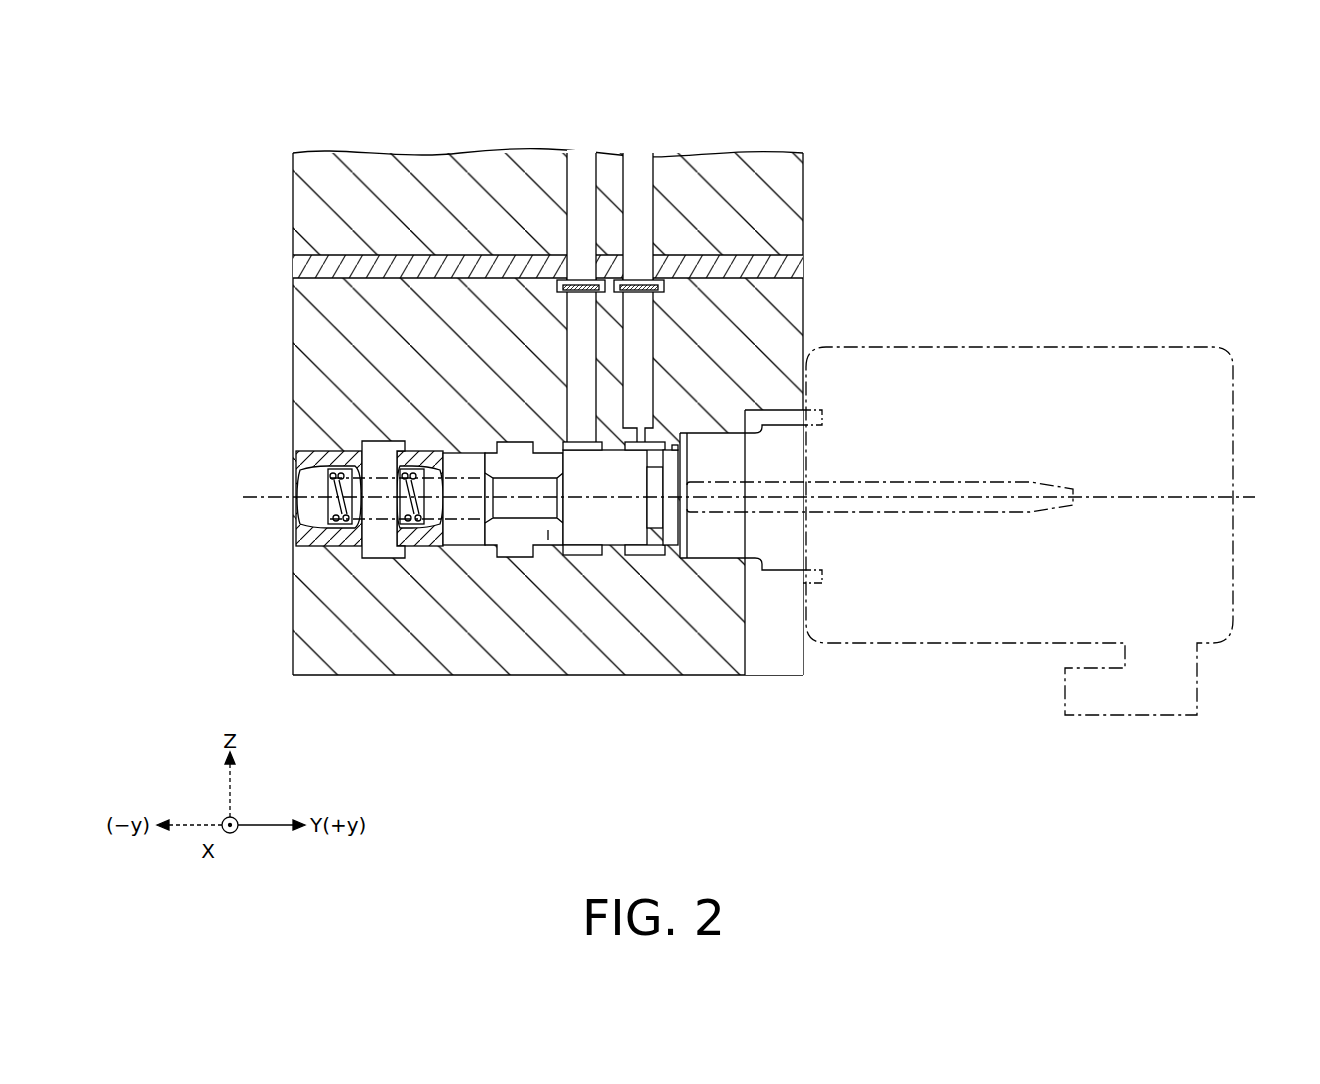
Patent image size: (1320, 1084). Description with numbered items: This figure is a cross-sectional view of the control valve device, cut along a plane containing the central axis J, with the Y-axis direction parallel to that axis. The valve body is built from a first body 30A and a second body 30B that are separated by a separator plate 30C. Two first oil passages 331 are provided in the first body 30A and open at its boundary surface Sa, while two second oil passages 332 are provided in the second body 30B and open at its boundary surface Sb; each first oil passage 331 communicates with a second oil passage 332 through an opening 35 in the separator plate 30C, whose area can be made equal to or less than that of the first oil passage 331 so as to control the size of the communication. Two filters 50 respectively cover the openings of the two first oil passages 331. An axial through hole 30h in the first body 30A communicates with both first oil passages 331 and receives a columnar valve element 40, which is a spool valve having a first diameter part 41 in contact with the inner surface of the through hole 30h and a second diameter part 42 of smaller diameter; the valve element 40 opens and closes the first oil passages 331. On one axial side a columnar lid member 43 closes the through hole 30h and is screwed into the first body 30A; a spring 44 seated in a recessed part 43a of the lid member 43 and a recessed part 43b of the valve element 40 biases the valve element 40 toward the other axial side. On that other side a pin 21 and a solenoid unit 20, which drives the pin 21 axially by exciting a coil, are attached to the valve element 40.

The first body 30A is at (305, 378).
The second body 30B is at (300, 188).
The separator plate 30C is at (305, 268).
The boundary surface Sa is at (303, 281).
The boundary surface Sb is at (324, 253).
The second oil passage 332 is at (646, 172).
The first oil passage 331 is at (650, 364).
The opening 35 is at (640, 278).
The filter 50 is at (642, 306).
The lid member 43 is at (293, 532).
The recessed part 43a is at (364, 548).
The recessed part 43b is at (398, 548).
The spring 44 is at (328, 478).
The second diameter part 42 is at (522, 508).
The through hole 30h is at (547, 537).
The valve element 40 is at (617, 547).
The first diameter part 41 is at (588, 532).
The solenoid unit 20 is at (1115, 347).
The pin 21 is at (972, 482).
The central axis J is at (1262, 497).